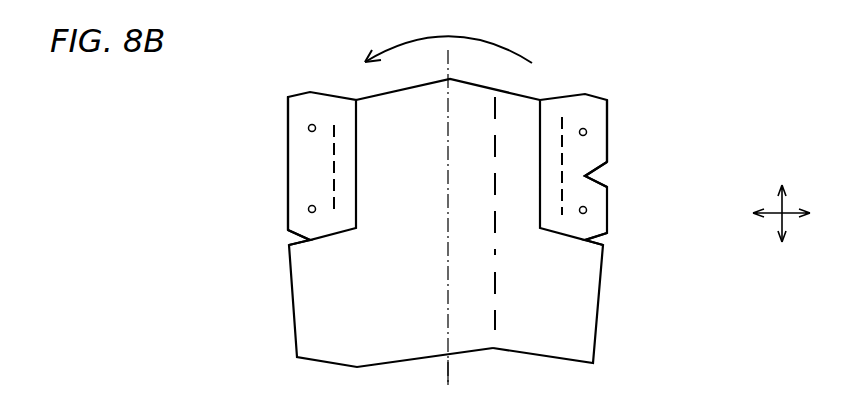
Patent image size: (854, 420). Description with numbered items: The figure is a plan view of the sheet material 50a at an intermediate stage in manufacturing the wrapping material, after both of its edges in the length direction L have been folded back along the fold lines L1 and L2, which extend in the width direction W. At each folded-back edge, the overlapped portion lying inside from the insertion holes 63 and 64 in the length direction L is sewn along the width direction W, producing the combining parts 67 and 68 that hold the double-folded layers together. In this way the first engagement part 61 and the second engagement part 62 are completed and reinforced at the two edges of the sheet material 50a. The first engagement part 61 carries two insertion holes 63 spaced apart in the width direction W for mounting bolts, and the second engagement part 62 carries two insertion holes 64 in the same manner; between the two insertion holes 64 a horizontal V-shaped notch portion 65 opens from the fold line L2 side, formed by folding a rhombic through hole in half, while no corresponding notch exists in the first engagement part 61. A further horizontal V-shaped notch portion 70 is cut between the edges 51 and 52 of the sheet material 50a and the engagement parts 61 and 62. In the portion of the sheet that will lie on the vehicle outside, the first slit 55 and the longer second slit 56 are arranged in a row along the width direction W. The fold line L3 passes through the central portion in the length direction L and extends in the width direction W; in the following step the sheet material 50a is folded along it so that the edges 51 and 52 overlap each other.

The sheet material 50a is at (418, 100).
The edge of the sheet material 51 is at (299, 332).
The edge of the sheet material 52 is at (597, 330).
The first slit 55 is at (495, 325).
The second slit 56 is at (498, 115).
The first engagement part 61 is at (300, 98).
The second engagement part 62 is at (592, 100).
The insertion holes 63 is at (308, 128).
The insertion holes 64 is at (587, 132).
The notch portion 65 is at (600, 176).
The combining part 67 is at (332, 178).
The combining part 68 is at (564, 194).
The notch portion 70 is at (300, 243).
The fold line L1 is at (288, 106).
The fold line L2 is at (607, 108).
The fold line L3 is at (448, 366).
The length direction L is at (783, 206).
The width direction W is at (783, 222).